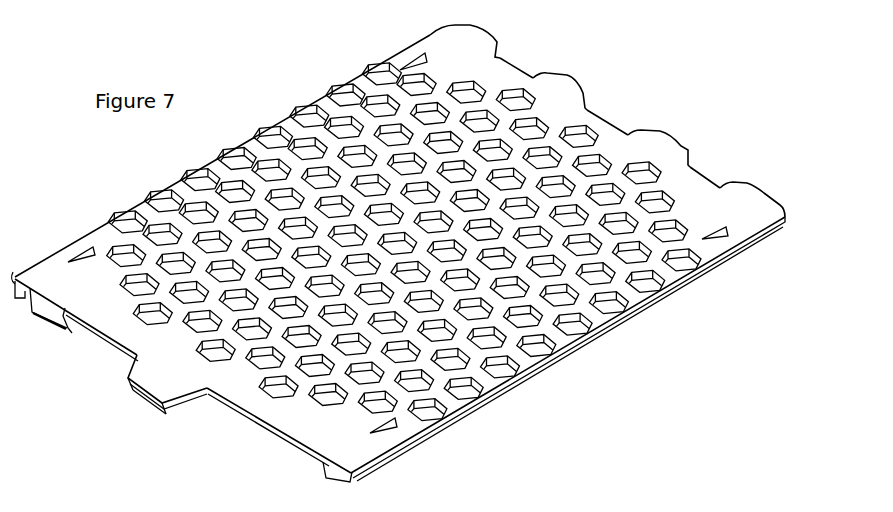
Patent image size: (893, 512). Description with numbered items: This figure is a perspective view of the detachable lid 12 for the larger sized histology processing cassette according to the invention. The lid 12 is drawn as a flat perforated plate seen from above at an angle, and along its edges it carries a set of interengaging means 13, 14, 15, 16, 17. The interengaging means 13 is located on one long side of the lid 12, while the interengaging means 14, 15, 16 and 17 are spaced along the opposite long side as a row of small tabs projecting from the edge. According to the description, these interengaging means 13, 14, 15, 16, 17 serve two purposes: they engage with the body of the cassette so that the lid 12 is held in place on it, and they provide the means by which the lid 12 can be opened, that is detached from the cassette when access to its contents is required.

The detachable lid 12 is at (348, 442).
The interengaging means 13 is at (152, 386).
The interengaging means 14 is at (480, 42).
The interengaging means 15 is at (570, 78).
The interengaging means 16 is at (676, 141).
The interengaging means 17 is at (762, 188).